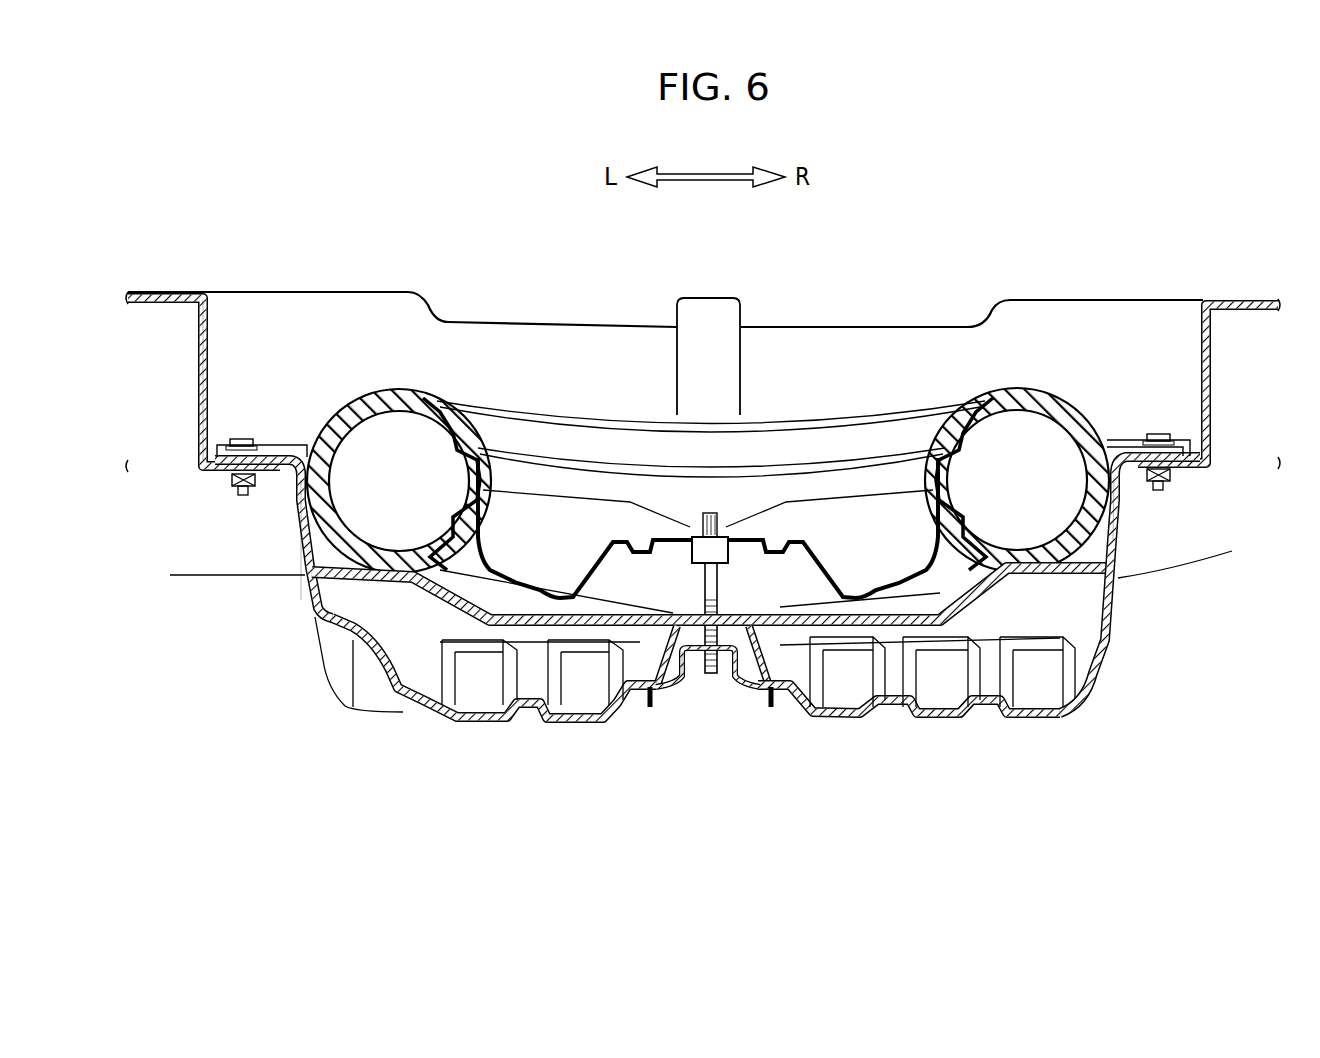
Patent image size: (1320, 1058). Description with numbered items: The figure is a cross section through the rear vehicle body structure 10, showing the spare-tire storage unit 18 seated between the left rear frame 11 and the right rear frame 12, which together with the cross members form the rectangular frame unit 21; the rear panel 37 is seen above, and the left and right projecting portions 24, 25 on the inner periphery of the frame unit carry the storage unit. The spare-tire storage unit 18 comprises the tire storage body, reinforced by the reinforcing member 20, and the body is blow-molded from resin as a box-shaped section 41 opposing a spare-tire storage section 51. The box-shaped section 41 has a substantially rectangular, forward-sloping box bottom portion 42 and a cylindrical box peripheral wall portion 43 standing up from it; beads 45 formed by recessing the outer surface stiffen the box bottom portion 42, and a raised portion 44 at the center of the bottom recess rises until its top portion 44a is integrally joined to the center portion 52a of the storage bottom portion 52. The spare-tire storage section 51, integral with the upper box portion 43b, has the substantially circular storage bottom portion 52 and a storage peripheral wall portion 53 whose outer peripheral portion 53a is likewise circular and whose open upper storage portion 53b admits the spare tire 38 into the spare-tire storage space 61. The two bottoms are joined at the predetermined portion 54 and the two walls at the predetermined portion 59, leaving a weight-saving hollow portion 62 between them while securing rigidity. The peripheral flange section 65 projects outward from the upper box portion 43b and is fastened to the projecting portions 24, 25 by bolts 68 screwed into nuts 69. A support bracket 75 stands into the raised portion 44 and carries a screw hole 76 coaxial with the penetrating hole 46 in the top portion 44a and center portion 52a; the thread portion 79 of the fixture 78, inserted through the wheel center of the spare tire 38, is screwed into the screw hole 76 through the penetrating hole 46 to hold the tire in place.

The rear vehicle body structure 10 is at (893, 212).
The left rear frame 11 is at (150, 292).
The right rear frame 12 is at (1255, 300).
The spare-tire storage unit 18 is at (343, 713).
The reinforcing member 20 is at (648, 708).
The rectangular frame unit 21 is at (212, 375).
The left projecting portion 24 is at (217, 470).
The right projecting portion 25 is at (1197, 467).
The rear panel 37 is at (613, 350).
The spare tire 38 is at (1042, 388).
The box-shaped section 41 is at (1205, 662).
The box bottom portion 42 is at (1040, 722).
The box peripheral wall portion 43 is at (1102, 597).
The upper box portion 43b is at (1130, 477).
The raised portion 44 is at (782, 647).
The top portion 44a is at (684, 687).
The beads 45 is at (525, 718).
The penetrating hole 46 is at (705, 618).
The spare-tire storage section 51 is at (190, 612).
The storage bottom portion 52 is at (490, 624).
The center portion 52a is at (733, 613).
The storage peripheral wall portion 53 is at (300, 548).
The outer peripheral portion 53a is at (332, 490).
The open upper storage portion 53b is at (303, 475).
The predetermined portion 54 is at (593, 578).
The predetermined portion 59 is at (305, 523).
The spare-tire storage space 61 is at (940, 595).
The hollow portion 62 is at (400, 688).
The peripheral flange section 65 is at (1181, 437).
The bolts 68 is at (238, 439).
The nuts 69 is at (240, 492).
The support bracket 75 is at (660, 663).
The screw hole 76 is at (722, 670).
The fixture 78 is at (722, 527).
The thread portion 79 is at (713, 690).